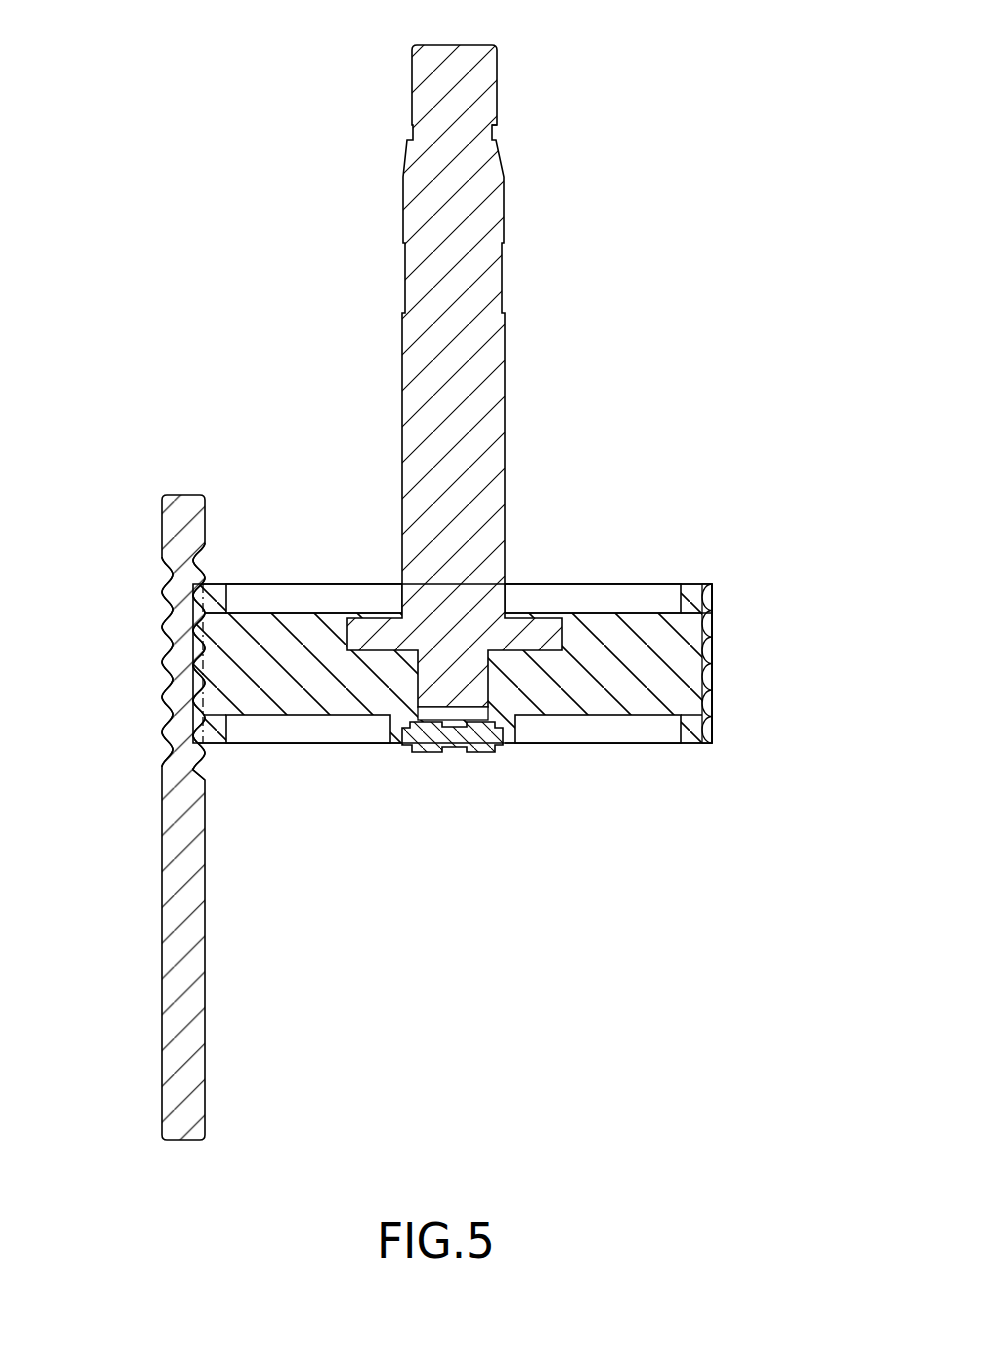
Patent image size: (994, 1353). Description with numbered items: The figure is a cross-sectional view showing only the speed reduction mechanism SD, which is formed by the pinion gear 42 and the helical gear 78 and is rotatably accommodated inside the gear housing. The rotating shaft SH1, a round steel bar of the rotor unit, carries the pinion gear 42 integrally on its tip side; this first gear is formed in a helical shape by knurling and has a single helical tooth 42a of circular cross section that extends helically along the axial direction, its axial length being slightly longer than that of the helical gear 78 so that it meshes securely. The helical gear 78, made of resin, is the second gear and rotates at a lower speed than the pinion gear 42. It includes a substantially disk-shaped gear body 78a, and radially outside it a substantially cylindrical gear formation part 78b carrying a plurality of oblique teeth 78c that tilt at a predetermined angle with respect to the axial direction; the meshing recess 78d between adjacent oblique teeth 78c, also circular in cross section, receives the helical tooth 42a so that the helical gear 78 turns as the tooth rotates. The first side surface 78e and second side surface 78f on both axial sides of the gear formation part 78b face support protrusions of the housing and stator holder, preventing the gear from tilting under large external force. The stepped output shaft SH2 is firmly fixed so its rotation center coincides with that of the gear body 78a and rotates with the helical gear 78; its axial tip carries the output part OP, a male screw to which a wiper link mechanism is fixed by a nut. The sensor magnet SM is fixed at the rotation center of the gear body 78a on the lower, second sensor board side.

The output part OP is at (472, 85).
The output shaft SH2 is at (453, 360).
The rotating shaft SH1 is at (182, 980).
The pinion gear 42 is at (166, 606).
The helical tooth 42a is at (168, 682).
The helical gear 78 is at (609, 742).
The gear body 78a is at (613, 670).
The gear formation part 78b is at (683, 728).
The oblique teeth 78c is at (710, 723).
The meshing recess 78d is at (703, 670).
The first side surface 78e is at (692, 585).
The second side surface 78f is at (207, 745).
The sensor magnet SM is at (480, 738).
The speed reduction mechanism SD is at (420, 860).